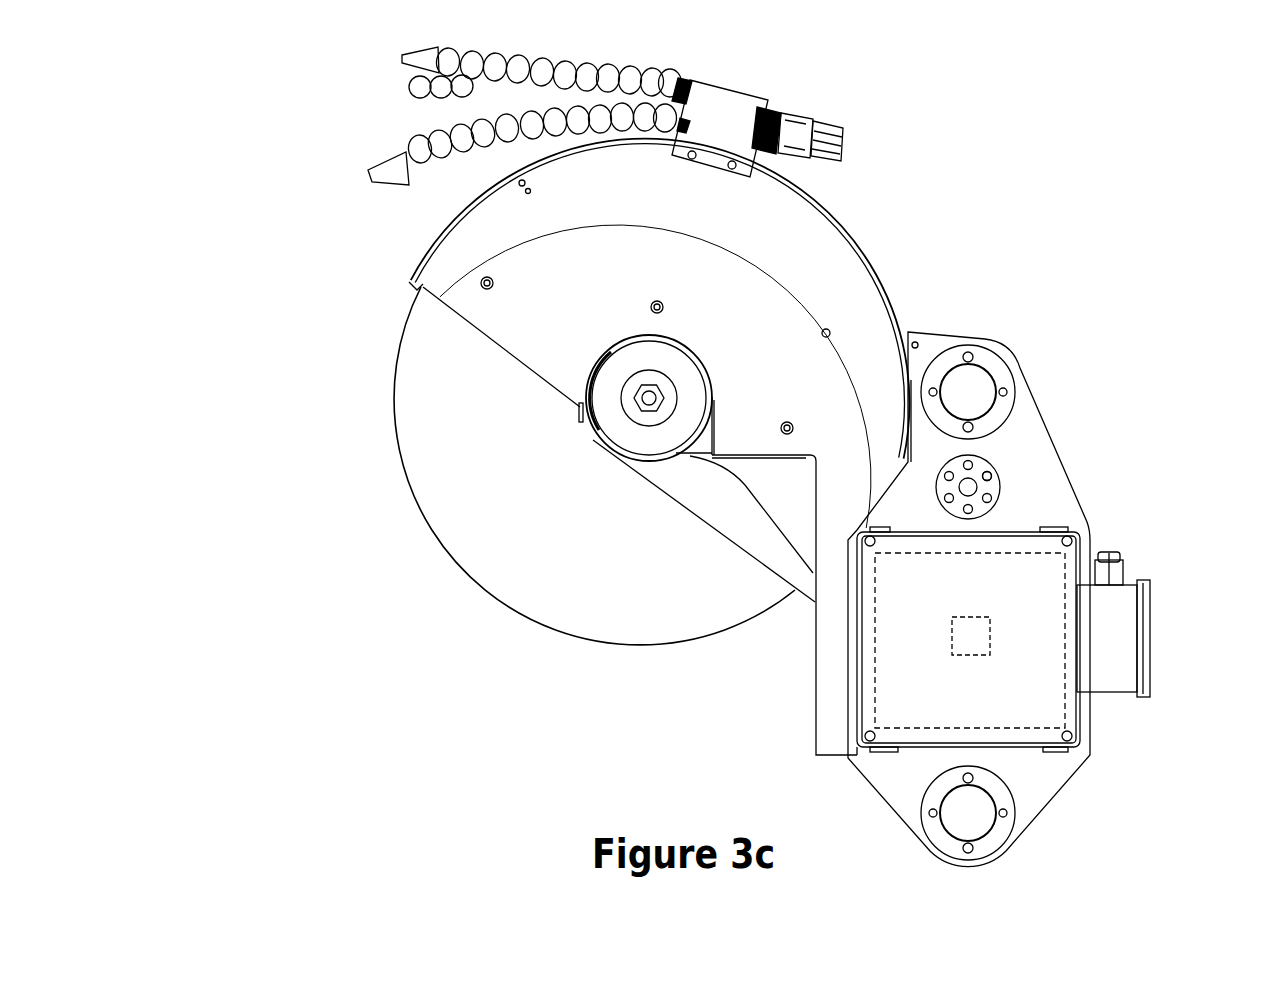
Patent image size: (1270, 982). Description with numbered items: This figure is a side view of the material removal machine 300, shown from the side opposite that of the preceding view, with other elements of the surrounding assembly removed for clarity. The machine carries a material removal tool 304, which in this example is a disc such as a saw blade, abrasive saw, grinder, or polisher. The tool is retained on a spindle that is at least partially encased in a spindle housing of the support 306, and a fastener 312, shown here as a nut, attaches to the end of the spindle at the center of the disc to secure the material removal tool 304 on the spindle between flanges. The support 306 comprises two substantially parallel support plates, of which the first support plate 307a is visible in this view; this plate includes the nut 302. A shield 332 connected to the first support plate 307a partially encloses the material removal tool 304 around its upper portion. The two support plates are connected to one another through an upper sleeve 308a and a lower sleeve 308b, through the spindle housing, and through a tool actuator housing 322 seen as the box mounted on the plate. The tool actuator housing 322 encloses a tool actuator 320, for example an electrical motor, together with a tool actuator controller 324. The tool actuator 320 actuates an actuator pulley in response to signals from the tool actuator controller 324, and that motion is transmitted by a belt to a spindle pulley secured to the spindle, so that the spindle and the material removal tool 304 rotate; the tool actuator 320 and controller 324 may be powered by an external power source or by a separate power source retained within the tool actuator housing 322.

The material removal machine 300 is at (1165, 148).
The nut 302 is at (991, 471).
The material removal tool 304 is at (395, 426).
The support 306 is at (964, 332).
The first support plate 307a is at (1030, 451).
The upper sleeve 308a is at (988, 378).
The lower sleeve 308b is at (1003, 828).
The fastener 312 is at (680, 362).
The tool actuator 320 is at (970, 616).
The tool actuator housing 322 is at (867, 678).
The tool actuator controller 324 is at (1065, 641).
The shield 332 is at (437, 268).